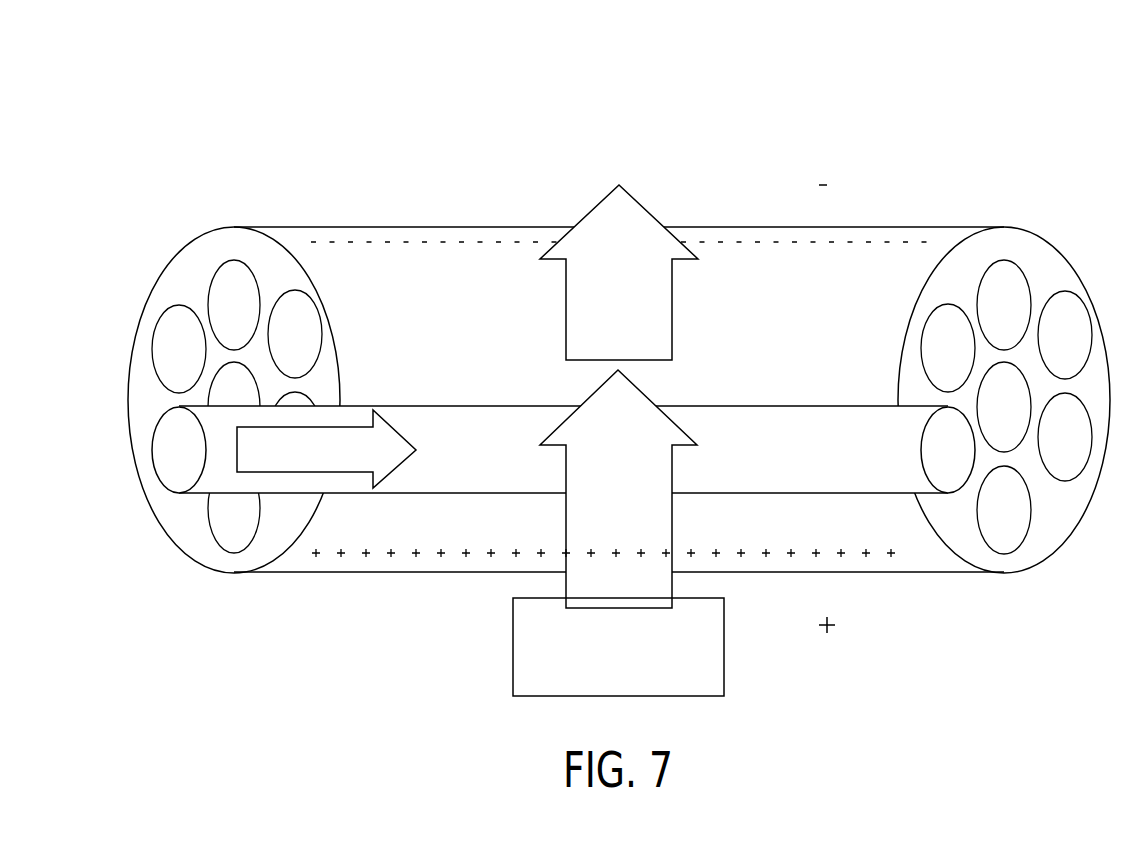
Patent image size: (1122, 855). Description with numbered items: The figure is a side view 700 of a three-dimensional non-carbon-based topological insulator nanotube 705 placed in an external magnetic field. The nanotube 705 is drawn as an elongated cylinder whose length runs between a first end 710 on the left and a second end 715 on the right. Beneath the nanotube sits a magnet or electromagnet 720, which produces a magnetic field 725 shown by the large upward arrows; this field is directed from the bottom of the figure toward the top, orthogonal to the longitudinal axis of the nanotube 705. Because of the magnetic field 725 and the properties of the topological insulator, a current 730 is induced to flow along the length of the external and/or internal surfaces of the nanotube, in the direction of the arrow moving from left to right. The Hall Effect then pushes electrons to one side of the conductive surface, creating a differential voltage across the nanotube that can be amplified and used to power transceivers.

The side view 700 is at (177, 123).
The 3D non-carbon-based topological insulator nanotube 705 is at (460, 227).
The first end 710 is at (208, 229).
The second end 715 is at (1048, 241).
The magnet or electromagnet 720 is at (513, 650).
The magnetic field 725 is at (651, 217).
The current 730 is at (400, 431).